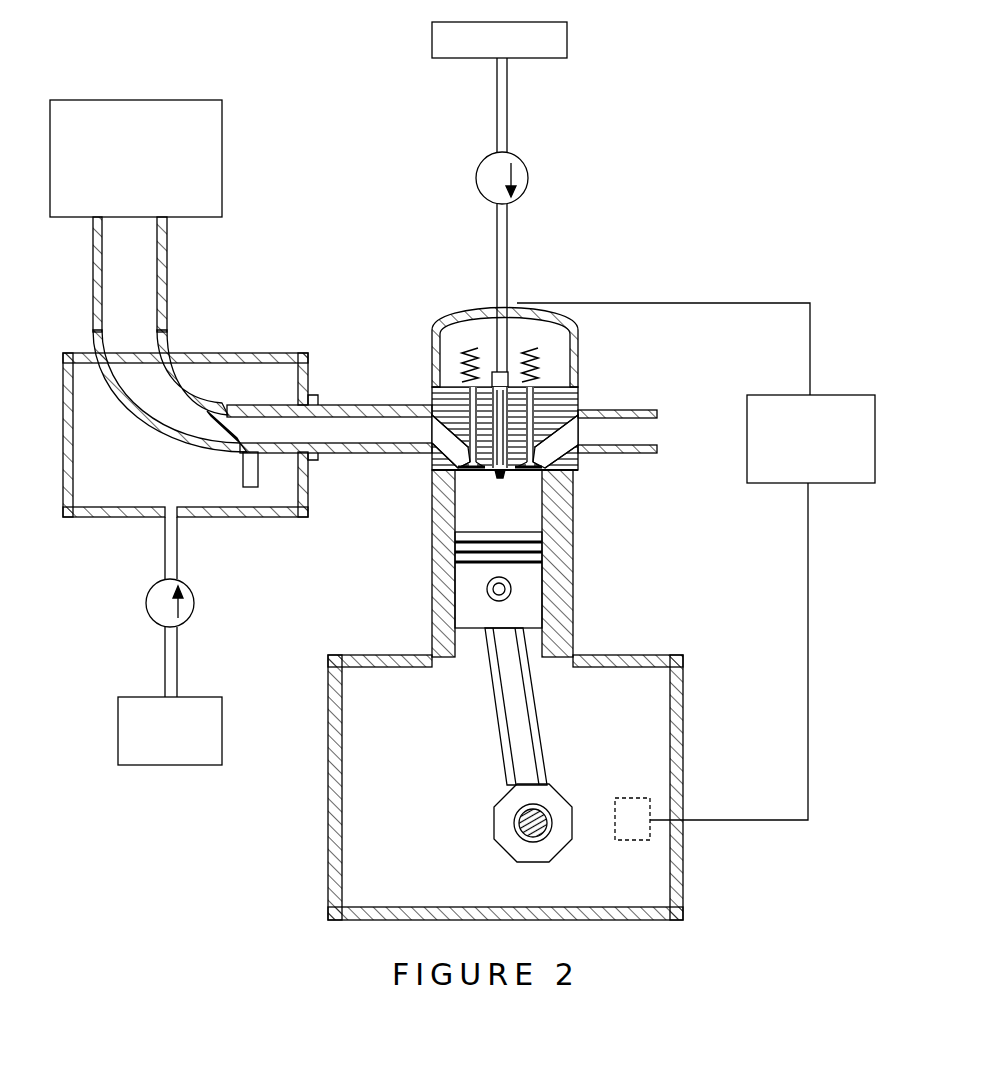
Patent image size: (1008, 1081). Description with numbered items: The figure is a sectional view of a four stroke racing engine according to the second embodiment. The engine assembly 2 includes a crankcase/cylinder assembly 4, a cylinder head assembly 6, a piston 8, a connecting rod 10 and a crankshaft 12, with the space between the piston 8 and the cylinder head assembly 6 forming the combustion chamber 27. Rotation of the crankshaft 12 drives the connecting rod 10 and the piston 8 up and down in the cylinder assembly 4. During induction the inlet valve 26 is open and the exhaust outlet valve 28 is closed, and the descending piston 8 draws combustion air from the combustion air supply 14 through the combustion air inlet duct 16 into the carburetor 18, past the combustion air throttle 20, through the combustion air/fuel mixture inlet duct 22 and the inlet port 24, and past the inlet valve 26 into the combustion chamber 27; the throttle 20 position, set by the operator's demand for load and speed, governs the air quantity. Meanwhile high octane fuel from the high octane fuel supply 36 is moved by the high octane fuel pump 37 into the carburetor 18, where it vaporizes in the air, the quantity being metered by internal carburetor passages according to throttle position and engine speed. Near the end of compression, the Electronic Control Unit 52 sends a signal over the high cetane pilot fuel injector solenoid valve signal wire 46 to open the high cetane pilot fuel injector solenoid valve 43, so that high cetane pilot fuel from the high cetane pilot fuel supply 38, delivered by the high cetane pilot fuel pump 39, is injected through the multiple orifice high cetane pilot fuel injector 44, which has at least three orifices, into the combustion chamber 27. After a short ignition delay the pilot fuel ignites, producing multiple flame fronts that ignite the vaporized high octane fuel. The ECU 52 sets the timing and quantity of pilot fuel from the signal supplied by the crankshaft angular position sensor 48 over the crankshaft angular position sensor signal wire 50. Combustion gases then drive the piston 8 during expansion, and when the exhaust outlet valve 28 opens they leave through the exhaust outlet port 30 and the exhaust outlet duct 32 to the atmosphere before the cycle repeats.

The engine assembly 2 is at (188, 888).
The crankcase/cylinder assembly 4 is at (328, 735).
The cylinder head assembly 6 is at (578, 395).
The piston 8 is at (535, 598).
The connecting rod 10 is at (530, 718).
The crankshaft 12 is at (548, 812).
The combustion air supply 14 is at (222, 130).
The combustion air inlet duct 16 is at (167, 278).
The carburetor 18 is at (287, 357).
The combustion air throttle 20 is at (228, 408).
The combustion air/fuel mixture inlet duct 22 is at (372, 455).
The inlet port 24 is at (436, 455).
The inlet valve 26 is at (466, 470).
The combustion chamber 27 is at (458, 523).
The exhaust outlet valve 28 is at (528, 470).
The exhaust outlet port 30 is at (565, 462).
The exhaust outlet duct 32 is at (648, 455).
The high octane fuel supply 36 is at (118, 748).
The high octane fuel pump 37 is at (194, 600).
The high cetane pilot fuel supply 38 is at (567, 42).
The high cetane pilot fuel pump 39 is at (528, 172).
The high cetane pilot fuel injector solenoid valve 43 is at (492, 380).
The multiple orifice high cetane pilot fuel injector 44 is at (497, 476).
The high cetane pilot fuel injector solenoid valve signal wire 46 is at (810, 340).
The crankshaft angular position sensor 48 is at (636, 842).
The crankshaft angular position sensor signal wire 50 is at (812, 795).
The Electronic Control Unit (ECU) 52 is at (860, 483).